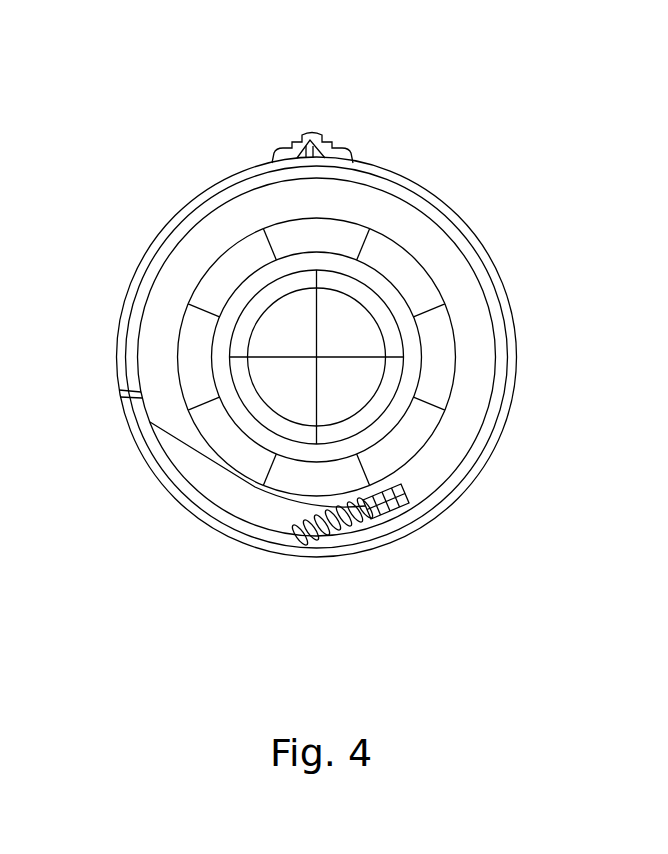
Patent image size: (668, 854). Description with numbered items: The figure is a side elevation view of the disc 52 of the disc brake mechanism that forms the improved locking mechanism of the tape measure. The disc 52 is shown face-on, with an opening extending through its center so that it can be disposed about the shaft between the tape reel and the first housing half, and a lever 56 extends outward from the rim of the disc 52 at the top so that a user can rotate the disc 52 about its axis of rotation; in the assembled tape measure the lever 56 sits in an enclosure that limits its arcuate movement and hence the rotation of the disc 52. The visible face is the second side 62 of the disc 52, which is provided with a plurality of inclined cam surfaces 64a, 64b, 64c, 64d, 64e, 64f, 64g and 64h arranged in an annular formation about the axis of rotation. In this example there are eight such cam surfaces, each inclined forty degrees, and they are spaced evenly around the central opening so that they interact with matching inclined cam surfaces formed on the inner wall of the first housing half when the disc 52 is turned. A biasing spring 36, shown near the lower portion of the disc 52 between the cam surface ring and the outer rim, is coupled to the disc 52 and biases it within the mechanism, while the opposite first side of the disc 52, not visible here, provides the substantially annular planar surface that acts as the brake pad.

The biasing spring 36 is at (395, 515).
The disc 52 is at (188, 200).
The lever 56 is at (292, 140).
The second side 62 is at (398, 215).
The inclined cam surface 64a is at (275, 455).
The inclined cam surface 64b is at (420, 440).
The inclined cam surface 64c is at (440, 357).
The inclined cam surface 64d is at (410, 273).
The inclined cam surface 64e is at (322, 237).
The inclined cam surface 64f is at (222, 272).
The inclined cam surface 64g is at (188, 350).
The inclined cam surface 64h is at (233, 447).